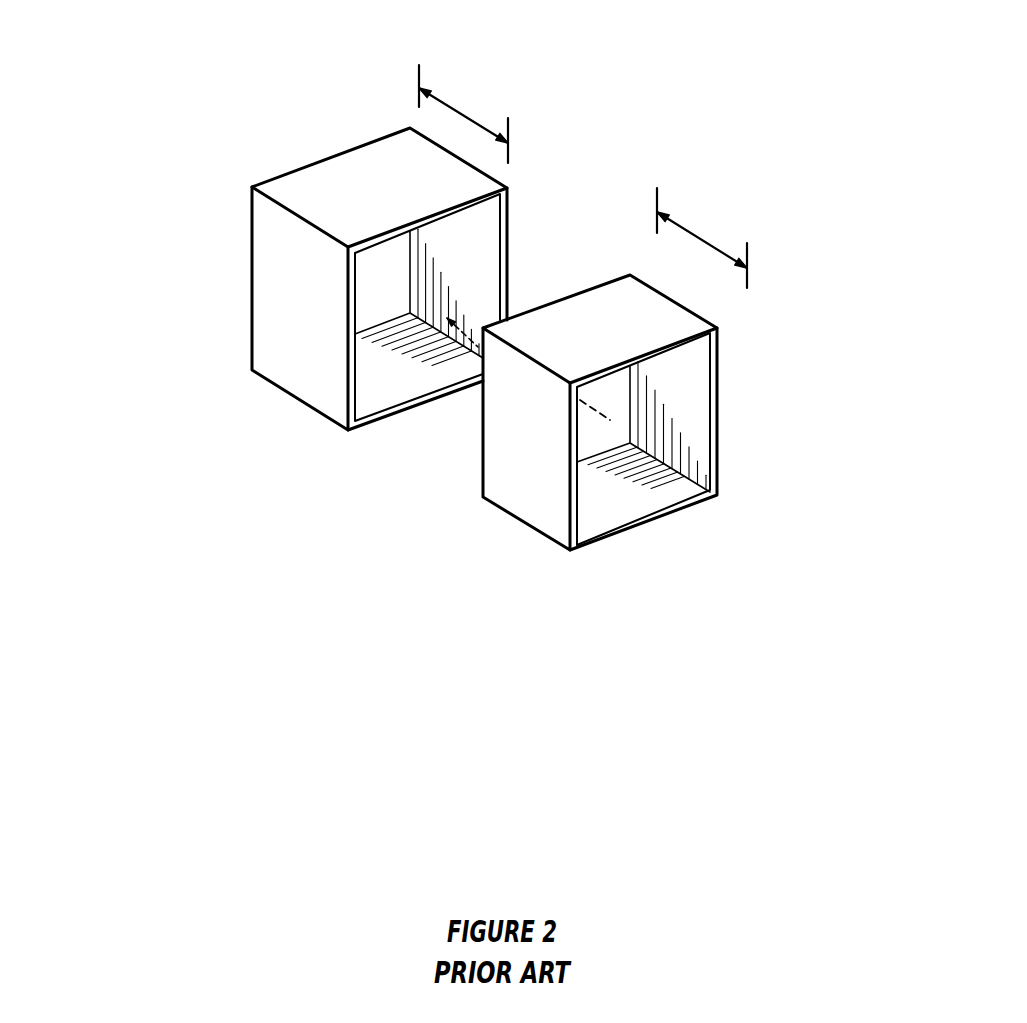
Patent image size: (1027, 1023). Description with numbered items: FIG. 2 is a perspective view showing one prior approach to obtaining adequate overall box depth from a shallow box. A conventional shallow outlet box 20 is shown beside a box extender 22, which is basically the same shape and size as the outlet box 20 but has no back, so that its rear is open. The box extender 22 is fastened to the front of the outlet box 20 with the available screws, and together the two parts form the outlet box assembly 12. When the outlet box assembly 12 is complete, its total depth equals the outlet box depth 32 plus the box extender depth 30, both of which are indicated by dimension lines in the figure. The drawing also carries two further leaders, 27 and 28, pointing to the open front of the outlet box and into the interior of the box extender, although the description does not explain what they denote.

The outlet box assembly 12 is at (567, 603).
The outlet box 20 is at (272, 312).
The box extender 22 is at (687, 508).
The open end of first block 27 is at (428, 226).
The interior of second block 28 is at (615, 434).
The box extender depth 30 is at (700, 237).
The outlet box depth 32 is at (468, 117).